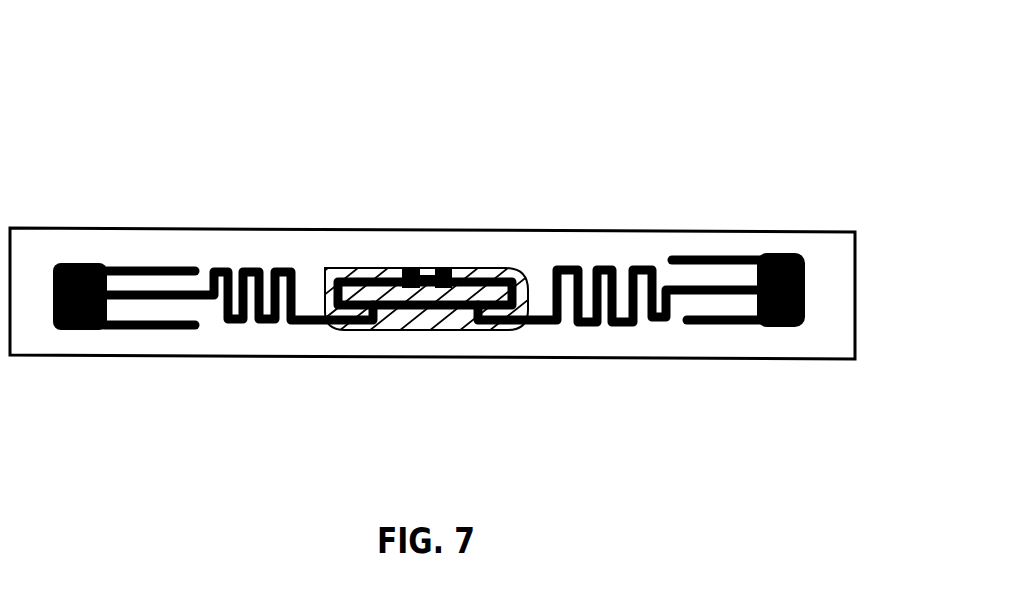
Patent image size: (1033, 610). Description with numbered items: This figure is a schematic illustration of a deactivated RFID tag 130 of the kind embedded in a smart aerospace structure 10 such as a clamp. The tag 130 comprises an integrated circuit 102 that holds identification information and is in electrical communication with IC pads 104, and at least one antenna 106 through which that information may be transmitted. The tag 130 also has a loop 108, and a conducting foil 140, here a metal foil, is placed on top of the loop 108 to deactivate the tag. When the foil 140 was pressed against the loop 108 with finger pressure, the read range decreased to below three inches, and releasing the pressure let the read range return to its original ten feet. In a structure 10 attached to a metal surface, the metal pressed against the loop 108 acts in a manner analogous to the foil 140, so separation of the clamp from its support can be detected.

The smart aerospace structure 10 is at (720, 72).
The integrated circuit 102 is at (424, 272).
The IC pads 104 is at (408, 265).
The antenna 106 is at (106, 258).
The loop 108 is at (413, 326).
The deactivated RFID tag 130 is at (634, 224).
The conducting foil 140 is at (333, 270).